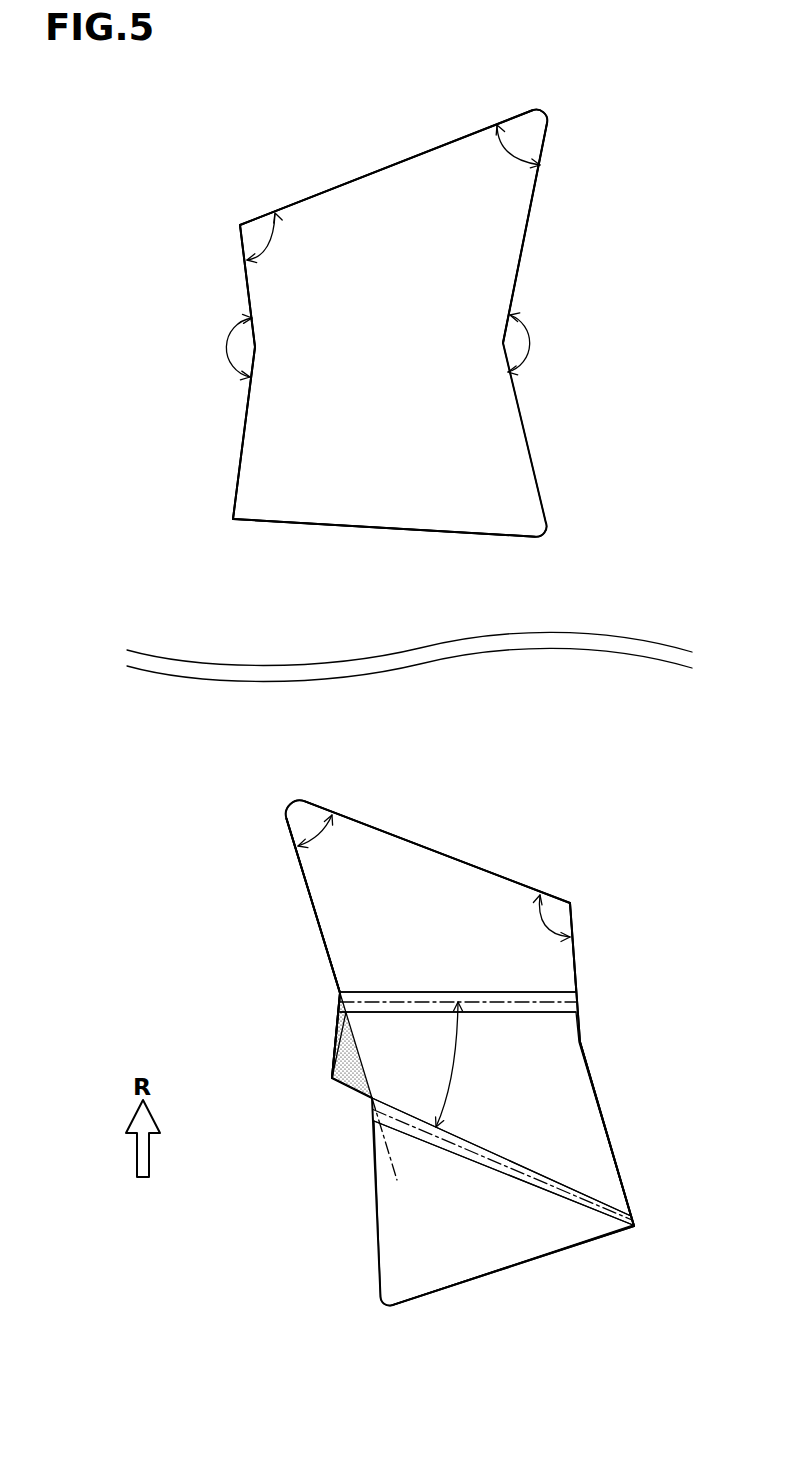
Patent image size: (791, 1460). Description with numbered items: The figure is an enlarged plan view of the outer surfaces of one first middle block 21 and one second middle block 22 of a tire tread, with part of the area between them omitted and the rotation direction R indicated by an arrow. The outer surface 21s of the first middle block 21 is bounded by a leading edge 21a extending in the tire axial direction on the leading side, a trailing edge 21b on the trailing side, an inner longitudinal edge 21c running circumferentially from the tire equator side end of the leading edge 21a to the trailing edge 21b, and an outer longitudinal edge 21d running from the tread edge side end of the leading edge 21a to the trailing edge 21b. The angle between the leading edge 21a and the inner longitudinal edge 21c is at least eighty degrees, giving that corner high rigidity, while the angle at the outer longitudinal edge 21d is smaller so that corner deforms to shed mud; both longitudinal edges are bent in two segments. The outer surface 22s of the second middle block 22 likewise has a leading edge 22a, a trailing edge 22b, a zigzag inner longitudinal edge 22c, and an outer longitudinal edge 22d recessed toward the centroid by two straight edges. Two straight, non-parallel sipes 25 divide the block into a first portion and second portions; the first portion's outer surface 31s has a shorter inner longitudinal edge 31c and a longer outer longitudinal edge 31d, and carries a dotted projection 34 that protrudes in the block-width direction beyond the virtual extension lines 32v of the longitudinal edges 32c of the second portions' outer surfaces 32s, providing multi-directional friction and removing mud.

The first middle block 21 is at (250, 165).
The leading edge 21a is at (363, 176).
The trailing edge 21b is at (347, 528).
The inner longitudinal edge 21c is at (244, 437).
The outer longitudinal edge 21d is at (520, 258).
The outer surface 21s is at (455, 430).
The second middle block 22 is at (245, 772).
The leading edge 22a is at (387, 831).
The trailing edge 22b is at (451, 1287).
The inner longitudinal edge 22c is at (200, 925).
The outer longitudinal edge 22d is at (617, 1165).
The outer surface 22s is at (542, 1226).
The sipes 25 is at (530, 996).
The inner longitudinal edge 31c is at (337, 1035).
The outer surface 31s is at (543, 1043).
The outer longitudinal edge 31d is at (595, 1092).
The longitudinal edge 32c is at (321, 928).
The outer surface 32s is at (440, 883).
The virtual extension line 32v is at (390, 1160).
The projection 34 is at (334, 1082).